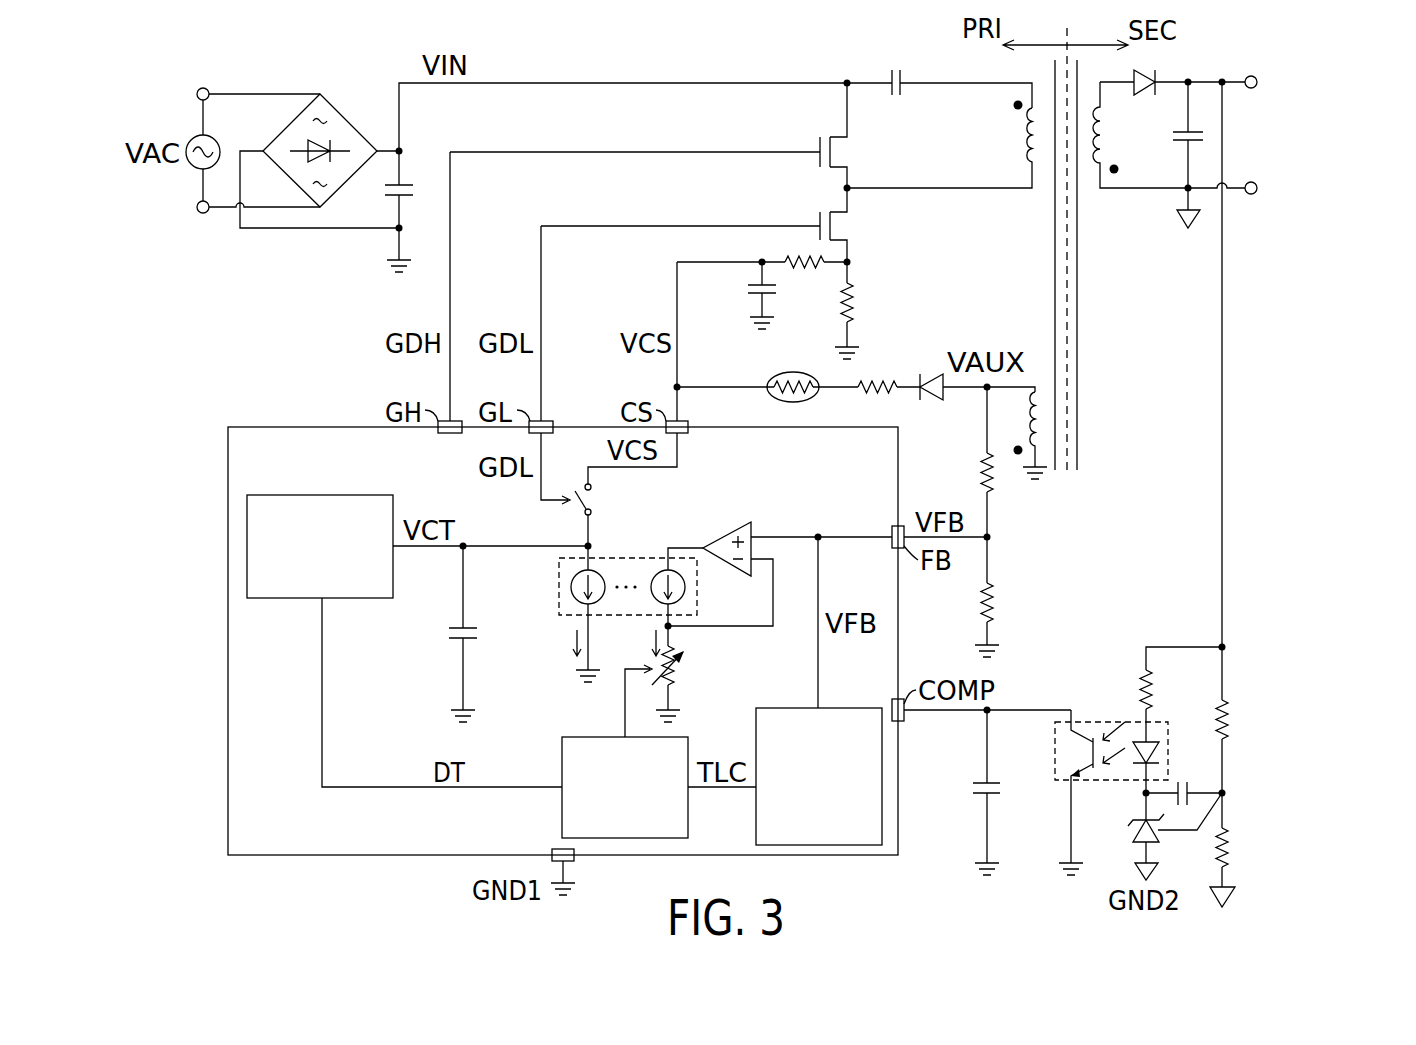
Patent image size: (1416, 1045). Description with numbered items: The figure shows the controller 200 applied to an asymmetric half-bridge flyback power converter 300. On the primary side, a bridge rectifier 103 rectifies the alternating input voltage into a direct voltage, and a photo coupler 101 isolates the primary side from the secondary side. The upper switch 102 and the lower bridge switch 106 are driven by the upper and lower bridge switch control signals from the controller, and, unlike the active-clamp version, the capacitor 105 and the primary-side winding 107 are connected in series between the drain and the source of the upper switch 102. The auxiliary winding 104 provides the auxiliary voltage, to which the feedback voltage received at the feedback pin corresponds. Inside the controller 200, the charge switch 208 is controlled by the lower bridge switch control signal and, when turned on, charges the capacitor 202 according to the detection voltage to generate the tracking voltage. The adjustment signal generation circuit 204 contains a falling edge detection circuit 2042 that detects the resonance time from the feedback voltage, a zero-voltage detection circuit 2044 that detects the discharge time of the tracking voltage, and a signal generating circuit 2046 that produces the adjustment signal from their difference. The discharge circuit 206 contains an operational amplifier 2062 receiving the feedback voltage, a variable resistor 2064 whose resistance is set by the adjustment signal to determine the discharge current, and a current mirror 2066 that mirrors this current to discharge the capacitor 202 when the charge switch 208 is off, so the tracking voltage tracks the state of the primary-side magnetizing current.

The asymmetric half-bridge flyback power converter 300 is at (1290, 87).
The photo coupler 101 is at (1093, 722).
The upper switch 102 is at (843, 158).
The bridge rectifier 103 is at (347, 121).
The auxiliary winding 104 is at (1036, 390).
The capacitor 105 is at (902, 90).
The lower bridge switch 106 is at (843, 232).
The primary-side winding 107 is at (1020, 135).
The controller 200 is at (270, 425).
The capacitor 202 is at (449, 618).
The adjustment signal generation circuit 204 is at (126, 719).
The falling edge detection circuit 2042 is at (855, 708).
The zero-voltage detection circuit 2044 is at (319, 493).
The signal generating circuit 2046 is at (562, 817).
The discharge circuit 206 is at (126, 834).
The operational amplifier 2062 is at (727, 532).
The variable resistor 2064 is at (673, 687).
The current mirror 2066 is at (558, 591).
The charge switch 208 is at (593, 500).